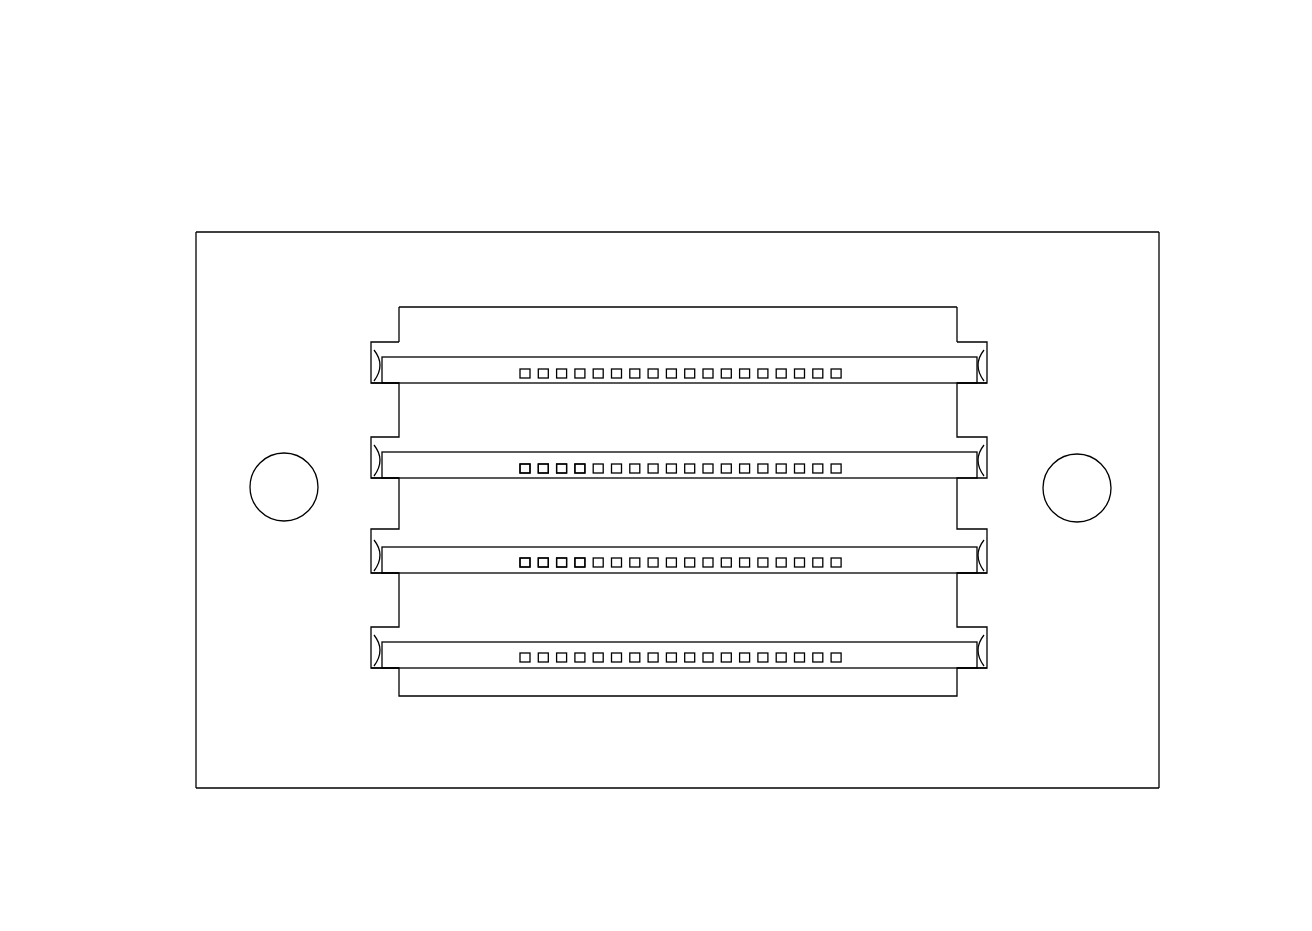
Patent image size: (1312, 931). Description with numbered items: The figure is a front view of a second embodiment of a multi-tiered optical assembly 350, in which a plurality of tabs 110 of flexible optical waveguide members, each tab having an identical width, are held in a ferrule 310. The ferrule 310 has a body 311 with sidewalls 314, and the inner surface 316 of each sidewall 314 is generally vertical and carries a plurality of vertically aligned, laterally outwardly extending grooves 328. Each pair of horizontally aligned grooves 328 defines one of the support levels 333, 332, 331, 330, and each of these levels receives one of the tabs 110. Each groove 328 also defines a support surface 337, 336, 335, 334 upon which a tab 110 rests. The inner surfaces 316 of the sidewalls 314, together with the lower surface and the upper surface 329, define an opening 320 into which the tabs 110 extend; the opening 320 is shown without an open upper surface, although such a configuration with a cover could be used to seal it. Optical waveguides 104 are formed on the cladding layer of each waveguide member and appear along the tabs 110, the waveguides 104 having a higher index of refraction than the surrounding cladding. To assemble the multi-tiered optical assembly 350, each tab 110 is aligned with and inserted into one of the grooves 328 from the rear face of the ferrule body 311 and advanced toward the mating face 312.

The multi-tiered optical assembly 350 is at (1108, 89).
The ferrule 310 is at (1218, 128).
The body 311 is at (1150, 301).
The mating face 312 is at (1150, 396).
The sidewall 314 is at (1150, 613).
The opening 320 is at (701, 330).
The upper surface 329 is at (566, 302).
The inner surface 316 is at (403, 328).
The tab 110 is at (890, 472).
The optical waveguide 104 is at (525, 473).
The groove 328 is at (376, 362).
The support level 333 is at (1010, 336).
The support level 332 is at (1036, 437).
The support level 331 is at (1003, 574).
The support level 330 is at (1003, 690).
The support surface 337 is at (376, 384).
The support surface 336 is at (376, 478).
The support surface 335 is at (376, 573).
The support surface 334 is at (376, 668).